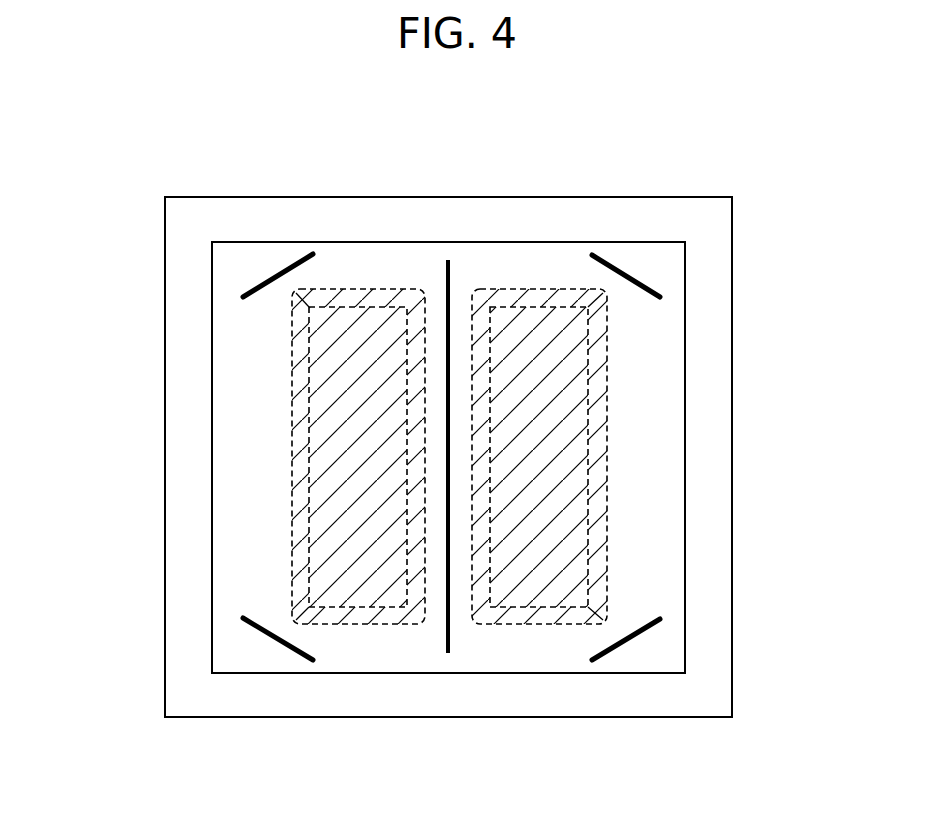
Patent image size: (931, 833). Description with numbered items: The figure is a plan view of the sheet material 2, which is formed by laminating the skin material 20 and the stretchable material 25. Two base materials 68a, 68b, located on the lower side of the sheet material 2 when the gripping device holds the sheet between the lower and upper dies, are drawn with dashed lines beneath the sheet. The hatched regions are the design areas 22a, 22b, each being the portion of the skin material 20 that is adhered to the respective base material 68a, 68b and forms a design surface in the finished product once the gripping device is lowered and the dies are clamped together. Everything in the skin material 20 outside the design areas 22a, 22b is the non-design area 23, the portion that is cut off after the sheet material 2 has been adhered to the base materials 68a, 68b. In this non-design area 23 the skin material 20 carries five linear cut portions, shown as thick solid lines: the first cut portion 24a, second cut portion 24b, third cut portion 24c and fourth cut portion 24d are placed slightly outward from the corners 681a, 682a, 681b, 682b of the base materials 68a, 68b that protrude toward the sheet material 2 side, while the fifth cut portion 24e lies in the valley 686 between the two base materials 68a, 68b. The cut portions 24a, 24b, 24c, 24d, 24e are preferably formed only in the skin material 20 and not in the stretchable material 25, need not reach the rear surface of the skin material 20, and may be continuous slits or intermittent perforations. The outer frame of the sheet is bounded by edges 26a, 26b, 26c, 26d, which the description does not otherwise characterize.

The sheet material 2 is at (765, 148).
The skin material 20 is at (378, 242).
The design area 22a is at (352, 288).
The design area 22b is at (562, 290).
The non-design area 23 is at (661, 416).
The first cut portion 24a is at (275, 273).
The second cut portion 24b is at (276, 638).
The third cut portion 24c is at (636, 640).
The fourth cut portion 24d is at (632, 277).
The fifth cut portion 24e is at (447, 372).
The stretchable material 25 is at (482, 197).
The first side wall 26a is at (542, 217).
The second side wall 26b is at (183, 465).
The third side wall 26c is at (473, 695).
The fourth side wall 26d is at (712, 442).
The base material 68a is at (308, 540).
The base material 68b is at (582, 513).
The corner 681a is at (288, 308).
The corner 681b is at (607, 610).
The corner 682a is at (290, 605).
The corner 682b is at (603, 309).
The valley 686 is at (440, 281).